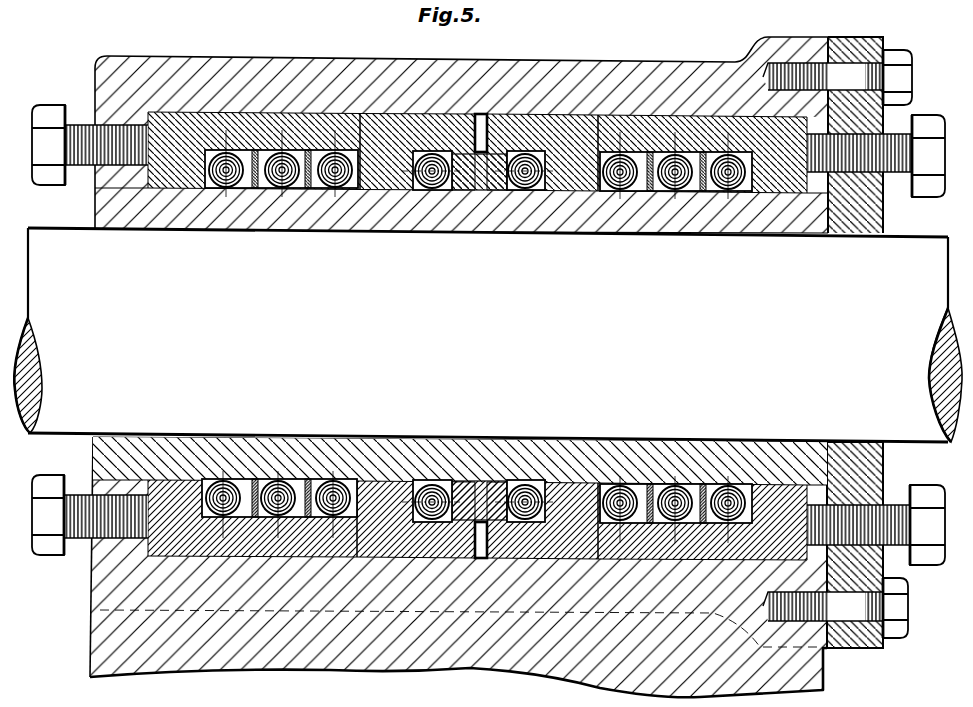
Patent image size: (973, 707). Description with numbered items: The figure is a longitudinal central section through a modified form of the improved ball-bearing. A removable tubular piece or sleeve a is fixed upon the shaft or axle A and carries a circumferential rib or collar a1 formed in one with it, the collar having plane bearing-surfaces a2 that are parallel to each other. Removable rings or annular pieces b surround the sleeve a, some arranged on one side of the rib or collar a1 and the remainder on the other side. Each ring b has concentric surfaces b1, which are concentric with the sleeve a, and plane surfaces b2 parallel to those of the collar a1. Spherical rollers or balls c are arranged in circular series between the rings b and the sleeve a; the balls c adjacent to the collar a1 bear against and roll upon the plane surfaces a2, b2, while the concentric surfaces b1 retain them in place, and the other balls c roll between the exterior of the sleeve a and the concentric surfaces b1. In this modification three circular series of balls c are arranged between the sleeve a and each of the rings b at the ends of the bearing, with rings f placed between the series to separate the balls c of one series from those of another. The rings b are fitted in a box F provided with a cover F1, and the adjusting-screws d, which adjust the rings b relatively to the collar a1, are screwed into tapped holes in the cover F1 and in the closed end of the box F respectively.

The shaft or axle A is at (488, 335).
The box F is at (459, 367).
The cover F1 is at (855, 342).
The tubular piece or sleeve a is at (460, 336).
The rib or collar a1 is at (507, 171).
The plane bearing-surfaces a2 is at (456, 184).
The rings or annular pieces b is at (477, 336).
The concentric surfaces b1 is at (485, 337).
The plane surfaces b2 is at (480, 336).
The spherical rollers or balls c is at (475, 336).
The adjusting-screws d is at (488, 344).
The rings f is at (502, 339).